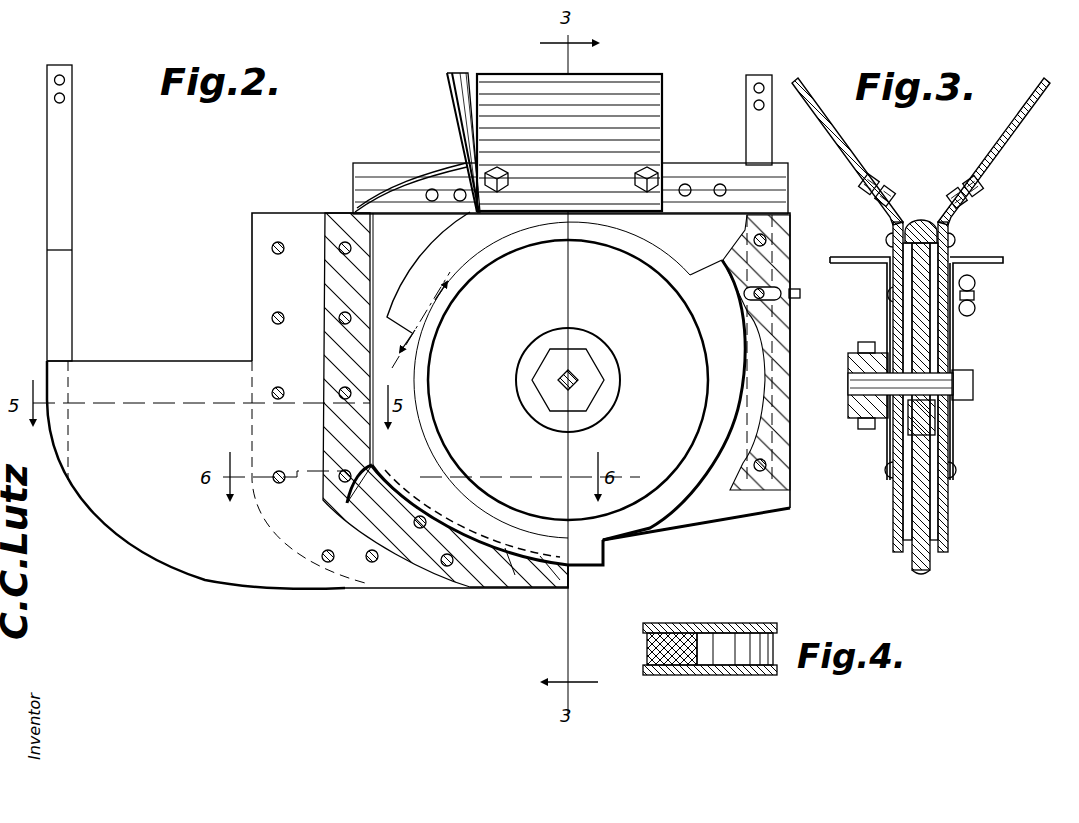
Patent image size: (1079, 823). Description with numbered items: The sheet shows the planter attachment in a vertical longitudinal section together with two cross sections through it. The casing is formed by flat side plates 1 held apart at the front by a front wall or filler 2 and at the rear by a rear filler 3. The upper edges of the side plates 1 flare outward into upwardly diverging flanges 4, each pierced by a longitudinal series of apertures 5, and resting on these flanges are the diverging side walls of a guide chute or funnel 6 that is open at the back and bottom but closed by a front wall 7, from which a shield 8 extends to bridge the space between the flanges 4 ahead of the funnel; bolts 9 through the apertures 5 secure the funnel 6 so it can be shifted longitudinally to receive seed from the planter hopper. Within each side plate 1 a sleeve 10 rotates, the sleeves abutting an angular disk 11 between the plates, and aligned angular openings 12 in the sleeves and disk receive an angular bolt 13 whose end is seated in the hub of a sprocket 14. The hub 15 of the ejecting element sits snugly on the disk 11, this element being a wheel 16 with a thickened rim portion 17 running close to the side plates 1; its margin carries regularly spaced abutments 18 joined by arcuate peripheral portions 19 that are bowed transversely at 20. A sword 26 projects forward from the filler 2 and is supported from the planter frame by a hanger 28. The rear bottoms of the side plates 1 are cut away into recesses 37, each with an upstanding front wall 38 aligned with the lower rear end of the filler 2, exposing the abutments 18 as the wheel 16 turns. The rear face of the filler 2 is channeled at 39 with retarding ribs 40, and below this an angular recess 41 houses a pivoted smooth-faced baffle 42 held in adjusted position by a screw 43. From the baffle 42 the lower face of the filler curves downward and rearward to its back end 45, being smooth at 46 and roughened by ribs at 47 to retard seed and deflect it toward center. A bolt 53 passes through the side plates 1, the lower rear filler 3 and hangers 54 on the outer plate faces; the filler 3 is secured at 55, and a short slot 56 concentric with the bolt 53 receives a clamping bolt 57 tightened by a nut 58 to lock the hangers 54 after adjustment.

In FIG. 3, the flat side plates 1 is at (978, 492).
In FIG. 4, the flat side plates 1 is at (772, 633).
In FIG. 2, the front wall or filler 2 is at (330, 225).
In FIG. 2, the rear filler 3 is at (778, 372).
In FIG. 2, the upwardly diverging flanges 4 is at (360, 165).
In FIG. 3, the upwardly diverging flanges 4 is at (982, 186).
In FIG. 2, the apertures 5 is at (690, 180).
In FIG. 2, the guide chute or funnel 6 is at (652, 105).
In FIG. 3, the guide chute or funnel 6 is at (1010, 148).
In FIG. 2, the front wall 7 is at (448, 85).
In FIG. 2, the shield 8 is at (400, 190).
In FIG. 2, the bolts 9 is at (497, 167).
In FIG. 3, the bolts 9 is at (977, 207).
In FIG. 3, the sleeve 10 is at (942, 370).
In FIG. 2, the angular disk 11 is at (598, 388).
In FIG. 3, the angular disk 11 is at (950, 402).
In FIG. 2, the alining angular openings 12 is at (575, 378).
In FIG. 3, the angular bolt 13 is at (930, 386).
In FIG. 3, the sprocket 14 is at (850, 415).
In FIG. 2, the hub 15 is at (585, 340).
In FIG. 2, the wheel 16 is at (568, 380).
In FIG. 2, the thickened rim portion 17 is at (540, 240).
In FIG. 4, the thickened rim portion 17 is at (675, 633).
In FIG. 2, the abutments 18 is at (605, 555).
In FIG. 4, the abutments 18 is at (720, 633).
In FIG. 2, the arcuate peripheral portions 19 is at (430, 450).
In FIG. 3, the transverse bow 20 is at (922, 222).
In FIG. 2, the sword 26 is at (150, 537).
In FIG. 2, the hanger 28 is at (72, 222).
In FIG. 3, the hanger 28 is at (1003, 260).
In FIG. 2, the recesses 37 is at (718, 520).
In FIG. 2, the upstanding front wall 38 is at (545, 555).
In FIG. 2, the channel 39 is at (380, 275).
In FIG. 2, the retarding ribs 40 is at (417, 319).
In FIG. 2, the angular recess 41 is at (375, 505).
In FIG. 2, the baffle 42 is at (400, 488).
In FIG. 2, the screw 43 is at (375, 470).
In FIG. 2, the back end 45 is at (575, 585).
In FIG. 2, the smooth portion 46 is at (560, 580).
In FIG. 2, the roughened portion 47 is at (515, 575).
In FIG. 2, the bolt 53 is at (766, 465).
In FIG. 3, the hangers 54 is at (957, 450).
In FIG. 2, the securing point 55 is at (766, 240).
In FIG. 2, the short slot 56 is at (781, 295).
In FIG. 2, the clamping bolt 57 is at (800, 290).
In FIG. 3, the clamping bolt 57 is at (974, 292).
In FIG. 3, the nut 58 is at (975, 310).